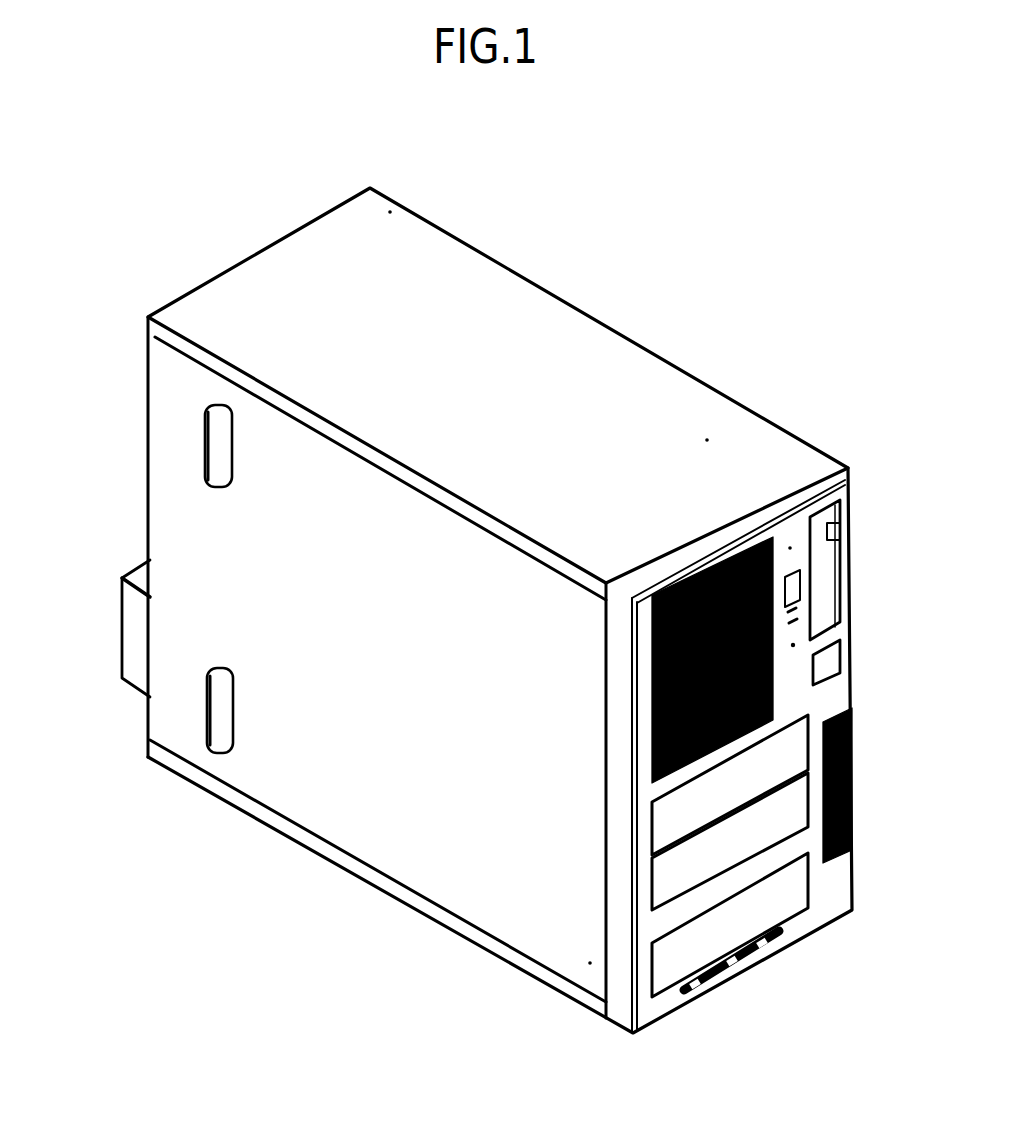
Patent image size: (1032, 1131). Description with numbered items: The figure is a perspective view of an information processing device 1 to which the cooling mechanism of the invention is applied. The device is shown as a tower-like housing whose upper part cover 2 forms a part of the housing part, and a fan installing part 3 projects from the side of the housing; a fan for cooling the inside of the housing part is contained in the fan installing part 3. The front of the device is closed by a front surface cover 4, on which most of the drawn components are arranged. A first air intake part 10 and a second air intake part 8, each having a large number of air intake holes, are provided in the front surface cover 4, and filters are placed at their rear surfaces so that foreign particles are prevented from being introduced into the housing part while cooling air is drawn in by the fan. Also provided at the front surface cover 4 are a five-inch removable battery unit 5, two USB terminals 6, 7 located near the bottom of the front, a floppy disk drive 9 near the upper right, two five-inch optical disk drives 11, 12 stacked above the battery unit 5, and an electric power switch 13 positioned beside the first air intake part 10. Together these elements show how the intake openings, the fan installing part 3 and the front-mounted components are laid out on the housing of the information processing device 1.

The information processing device 1 is at (660, 292).
The upper part cover 2 is at (433, 400).
The fan installing part 3 is at (133, 560).
The front surface cover 4 is at (846, 912).
The removable battery unit 5 is at (781, 937).
The USB terminal 6 is at (753, 963).
The USB terminal 7 is at (705, 992).
The second air intake part 8 is at (848, 822).
The floppy disk drive 9 is at (842, 600).
The first air intake part 10 is at (687, 571).
The optical disk drive 11 is at (672, 808).
The optical disk drive 12 is at (676, 870).
The electric power switch 13 is at (789, 578).